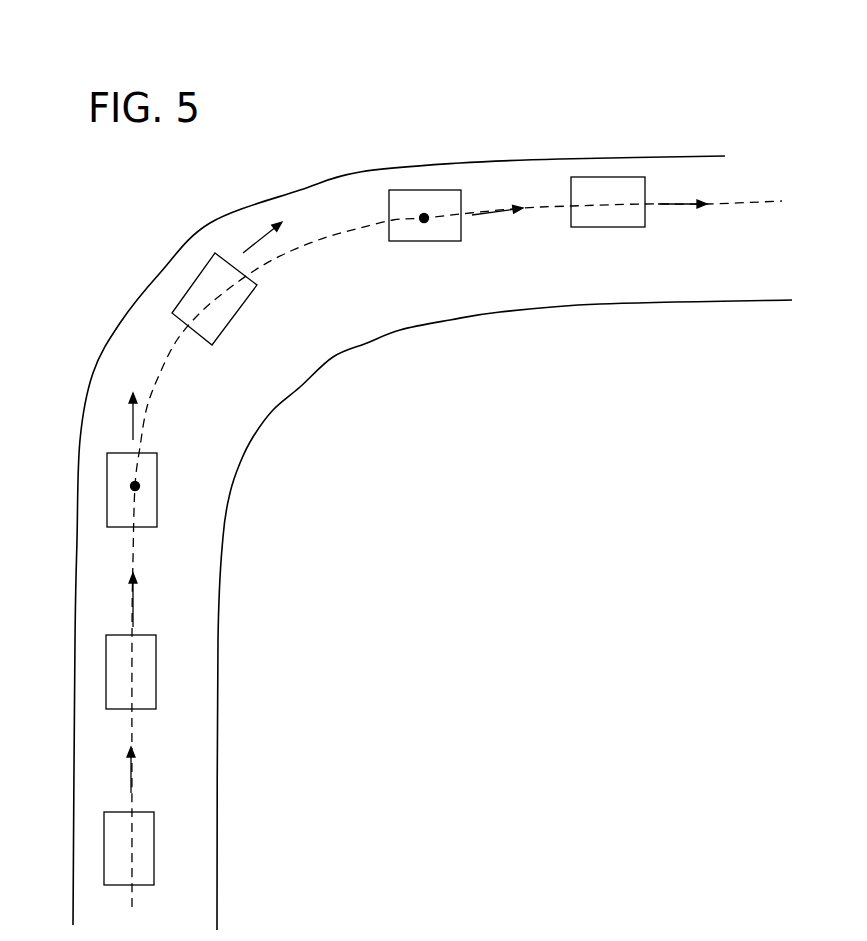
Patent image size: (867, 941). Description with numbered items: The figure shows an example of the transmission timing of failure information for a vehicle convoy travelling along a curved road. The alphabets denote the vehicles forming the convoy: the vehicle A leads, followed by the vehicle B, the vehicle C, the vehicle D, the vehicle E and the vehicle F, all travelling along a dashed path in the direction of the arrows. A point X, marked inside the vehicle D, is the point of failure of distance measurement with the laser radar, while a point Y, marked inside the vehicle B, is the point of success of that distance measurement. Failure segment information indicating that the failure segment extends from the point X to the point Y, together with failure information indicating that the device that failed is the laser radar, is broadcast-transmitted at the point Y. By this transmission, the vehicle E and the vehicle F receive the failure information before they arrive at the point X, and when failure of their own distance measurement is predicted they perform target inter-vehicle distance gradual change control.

The vehicle A is at (623, 177).
The vehicle B is at (437, 190).
The vehicle C is at (207, 268).
The vehicle D is at (107, 475).
The vehicle E is at (106, 656).
The vehicle F is at (104, 830).
The point X is at (139, 484).
The point Y is at (423, 223).